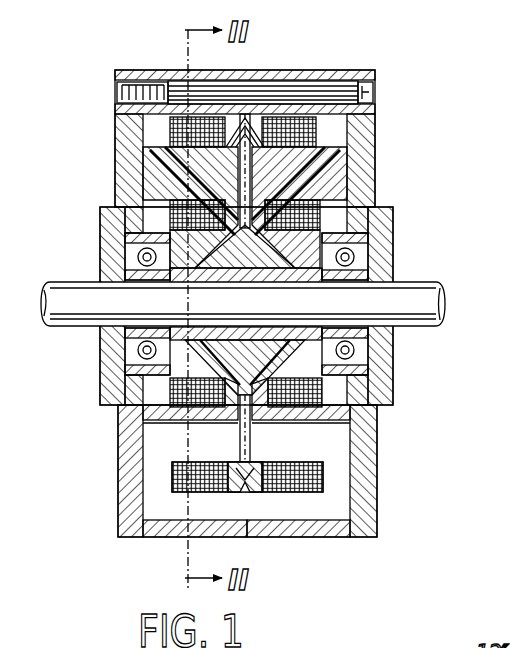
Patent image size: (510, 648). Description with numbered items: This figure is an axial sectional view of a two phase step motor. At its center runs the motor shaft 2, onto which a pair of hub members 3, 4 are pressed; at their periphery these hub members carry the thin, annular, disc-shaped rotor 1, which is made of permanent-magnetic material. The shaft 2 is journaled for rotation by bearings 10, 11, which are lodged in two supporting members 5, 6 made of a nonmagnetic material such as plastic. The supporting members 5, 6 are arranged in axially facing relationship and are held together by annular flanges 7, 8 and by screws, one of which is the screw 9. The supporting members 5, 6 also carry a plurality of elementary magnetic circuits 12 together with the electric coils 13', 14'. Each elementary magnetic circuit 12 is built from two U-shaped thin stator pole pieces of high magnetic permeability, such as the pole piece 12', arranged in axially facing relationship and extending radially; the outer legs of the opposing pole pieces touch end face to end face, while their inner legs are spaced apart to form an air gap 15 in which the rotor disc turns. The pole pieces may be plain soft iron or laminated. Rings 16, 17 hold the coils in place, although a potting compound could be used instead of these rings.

The rotor 1 is at (255, 459).
The shaft 2 is at (430, 303).
The hub member 3 is at (368, 252).
The hub member 4 is at (120, 250).
The supporting member 5 is at (372, 176).
The supporting member 6 is at (165, 178).
The annular flange 7 is at (378, 487).
The annular flange 8 is at (127, 488).
The screw 9 is at (327, 88).
The bearing 10 is at (375, 350).
The bearing 11 is at (143, 348).
The elementary magnetic circuit 12 is at (186, 463).
The stator pole piece 12' is at (292, 523).
The electric coil 13' is at (303, 548).
The electric coil 14' is at (346, 131).
The air gap 15 is at (250, 436).
The ring 16 is at (237, 114).
The ring 17 is at (257, 112).